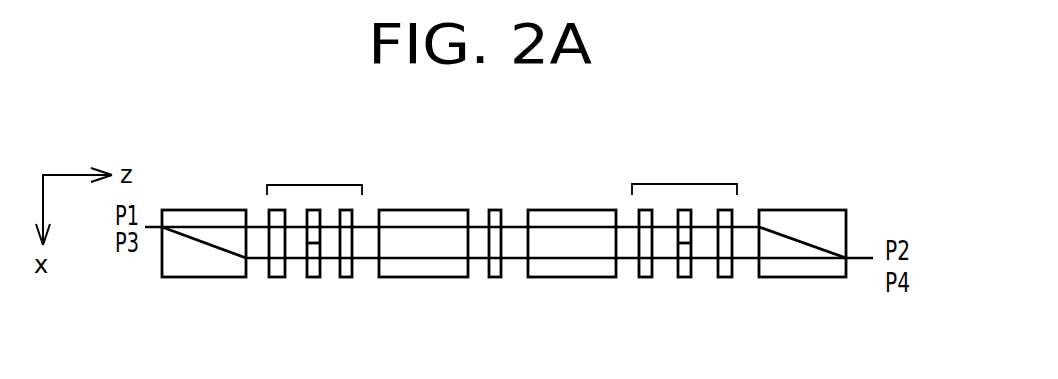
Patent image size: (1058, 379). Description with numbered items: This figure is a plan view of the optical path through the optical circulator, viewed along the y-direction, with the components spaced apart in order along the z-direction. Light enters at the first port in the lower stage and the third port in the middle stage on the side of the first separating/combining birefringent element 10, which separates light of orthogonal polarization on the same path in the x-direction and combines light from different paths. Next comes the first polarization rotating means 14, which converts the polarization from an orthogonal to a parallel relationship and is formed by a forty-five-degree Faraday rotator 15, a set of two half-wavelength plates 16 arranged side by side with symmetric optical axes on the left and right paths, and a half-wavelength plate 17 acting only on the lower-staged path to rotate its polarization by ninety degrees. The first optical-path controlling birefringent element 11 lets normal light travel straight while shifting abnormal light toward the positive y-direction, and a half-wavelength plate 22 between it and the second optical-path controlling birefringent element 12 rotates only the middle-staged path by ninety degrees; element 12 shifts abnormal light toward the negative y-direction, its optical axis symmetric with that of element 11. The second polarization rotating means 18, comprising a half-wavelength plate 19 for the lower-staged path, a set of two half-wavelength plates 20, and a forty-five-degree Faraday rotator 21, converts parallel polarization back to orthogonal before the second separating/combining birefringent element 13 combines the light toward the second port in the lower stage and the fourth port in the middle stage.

The first separating/combining birefringent element 10 is at (201, 210).
The first optical-path controlling birefringent element 11 is at (419, 220).
The second optical-path controlling birefringent element 12 is at (566, 215).
The second separating/combining birefringent element 13 is at (802, 218).
The first polarization rotating means 14 is at (314, 243).
The 45-degree Faraday rotator 15 is at (280, 273).
The set of two ½-wavelength plates 16 is at (313, 273).
The ½-wavelength plate 17 is at (344, 273).
The second polarization rotating means 18 is at (679, 242).
The ½-wavelength plate 19 is at (647, 273).
The set of two ½-wavelength plates 20 is at (683, 273).
The 45-degree Faraday rotator 21 is at (727, 273).
The ½-wavelength plate 22 is at (493, 210).